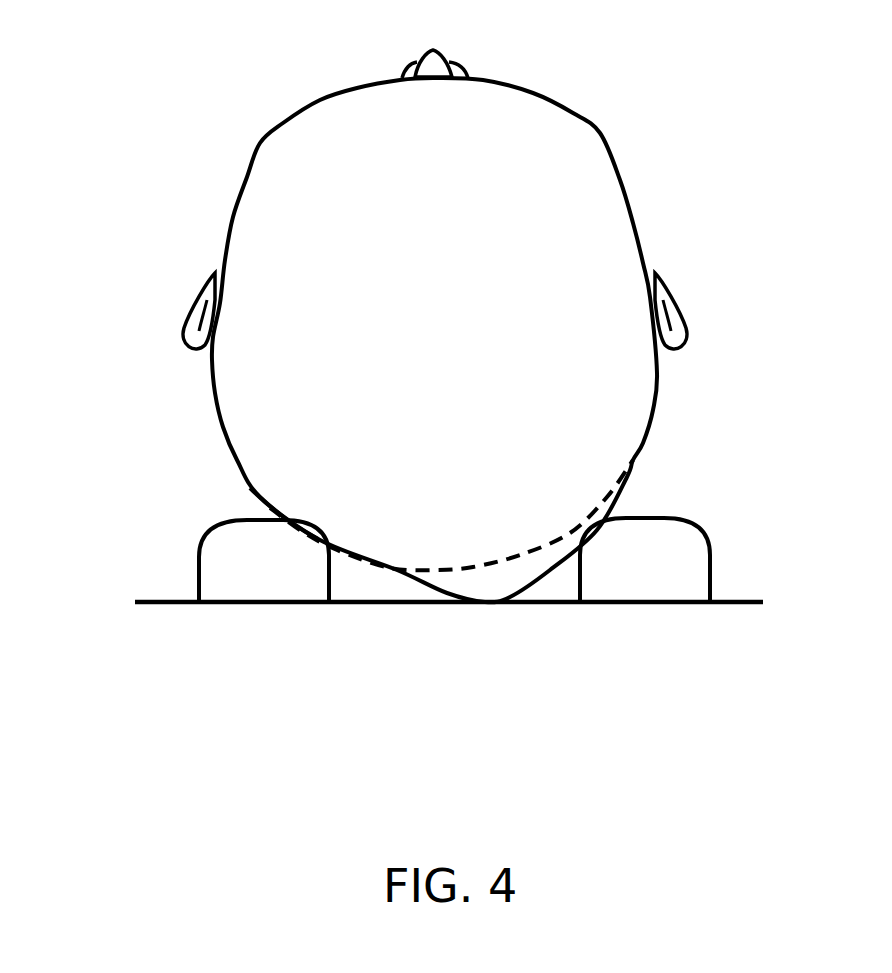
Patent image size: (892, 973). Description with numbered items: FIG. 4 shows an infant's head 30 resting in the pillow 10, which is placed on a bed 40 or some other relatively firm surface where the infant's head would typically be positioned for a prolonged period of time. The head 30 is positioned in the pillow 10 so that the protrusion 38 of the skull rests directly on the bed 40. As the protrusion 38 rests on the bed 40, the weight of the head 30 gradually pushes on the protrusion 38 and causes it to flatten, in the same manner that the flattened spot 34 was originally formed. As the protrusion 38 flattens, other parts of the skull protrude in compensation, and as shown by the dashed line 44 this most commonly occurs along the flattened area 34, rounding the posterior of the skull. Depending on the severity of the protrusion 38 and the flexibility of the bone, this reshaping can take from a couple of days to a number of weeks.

The head 30 is at (582, 143).
The pillow 10 is at (683, 557).
The flattened spot 34 is at (328, 550).
The protrusion 38 is at (507, 602).
The bed 40 is at (370, 602).
The dashed line 44 is at (263, 495).